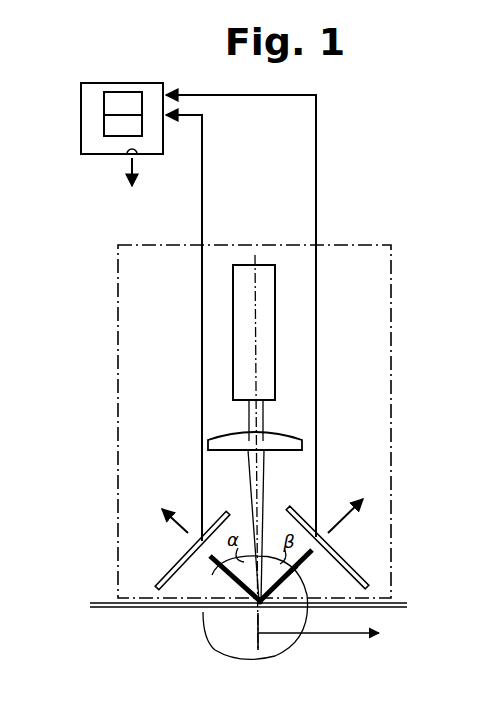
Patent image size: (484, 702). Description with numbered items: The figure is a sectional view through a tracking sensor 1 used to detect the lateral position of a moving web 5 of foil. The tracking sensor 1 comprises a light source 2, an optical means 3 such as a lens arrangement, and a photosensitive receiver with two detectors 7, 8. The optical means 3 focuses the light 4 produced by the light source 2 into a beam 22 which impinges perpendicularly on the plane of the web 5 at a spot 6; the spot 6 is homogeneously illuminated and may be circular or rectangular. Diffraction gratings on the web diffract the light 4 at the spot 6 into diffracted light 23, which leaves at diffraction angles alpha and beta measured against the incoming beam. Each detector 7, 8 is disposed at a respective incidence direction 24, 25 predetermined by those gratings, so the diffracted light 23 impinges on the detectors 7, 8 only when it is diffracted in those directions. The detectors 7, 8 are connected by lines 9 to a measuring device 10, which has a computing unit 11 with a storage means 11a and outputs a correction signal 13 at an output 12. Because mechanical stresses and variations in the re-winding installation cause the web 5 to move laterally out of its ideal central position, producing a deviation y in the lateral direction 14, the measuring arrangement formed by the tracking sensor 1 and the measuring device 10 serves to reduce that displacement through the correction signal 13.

The tracking sensor 1 is at (136, 274).
The light source 2 is at (240, 370).
The optical means 3 is at (225, 443).
The light 4 is at (257, 422).
The web 5 is at (122, 608).
The spot 6 is at (255, 610).
The detector 7 is at (168, 572).
The detector 8 is at (348, 572).
The lines 9 is at (316, 153).
The measuring device 10 is at (95, 145).
The computing unit 11 is at (120, 98).
The storage means 11a is at (117, 125).
The output 12 is at (128, 158).
The correction signal 13 is at (137, 162).
The lateral direction 14 is at (324, 634).
The beam 22 is at (255, 481).
The diffracted light 23 is at (248, 619).
The incidence direction 24 is at (176, 527).
The incidence direction 25 is at (337, 528).